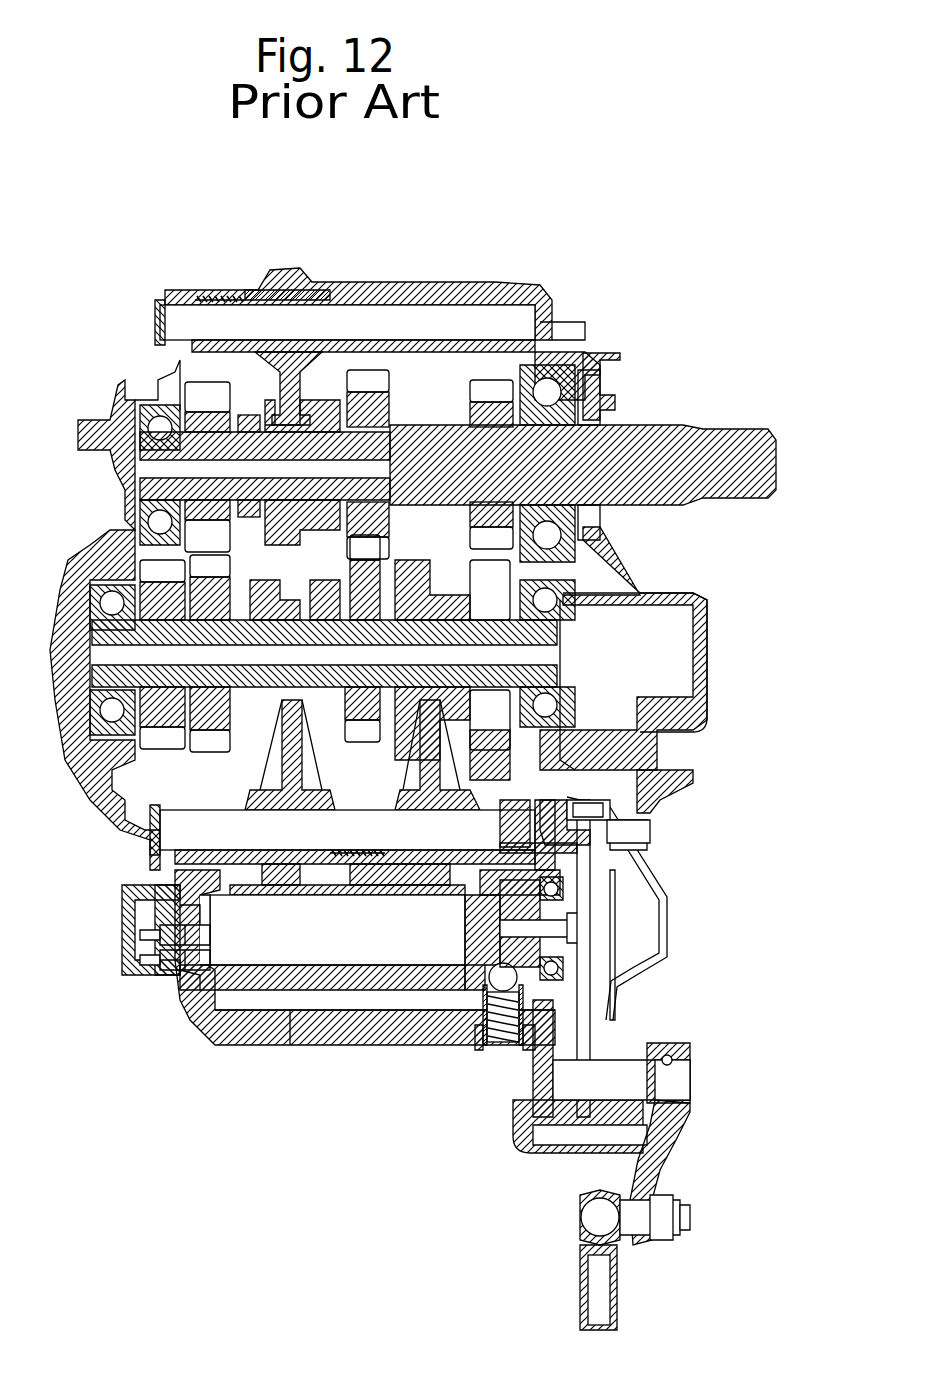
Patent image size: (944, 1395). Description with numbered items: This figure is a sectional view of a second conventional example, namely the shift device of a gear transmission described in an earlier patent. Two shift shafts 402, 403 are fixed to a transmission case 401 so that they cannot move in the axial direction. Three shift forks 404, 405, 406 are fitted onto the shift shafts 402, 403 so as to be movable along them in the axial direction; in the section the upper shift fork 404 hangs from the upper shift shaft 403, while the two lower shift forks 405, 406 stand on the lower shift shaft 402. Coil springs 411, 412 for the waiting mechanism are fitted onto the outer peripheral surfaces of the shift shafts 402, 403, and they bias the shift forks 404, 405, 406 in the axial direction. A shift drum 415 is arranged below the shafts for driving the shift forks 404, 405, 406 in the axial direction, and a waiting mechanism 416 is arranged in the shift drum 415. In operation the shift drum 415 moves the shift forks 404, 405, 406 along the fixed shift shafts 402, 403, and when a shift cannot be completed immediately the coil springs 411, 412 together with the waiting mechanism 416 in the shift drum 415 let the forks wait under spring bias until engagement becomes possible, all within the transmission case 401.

The transmission case 401 is at (263, 1035).
The shift shaft 402 is at (175, 821).
The shift shaft 403 is at (178, 328).
The shift fork 404 is at (289, 387).
The shift fork 405 is at (283, 766).
The shift fork 406 is at (423, 766).
The coil spring 411 is at (360, 858).
The coil spring 412 is at (213, 297).
The shift drum 415 is at (358, 985).
The waiting mechanism 416 is at (497, 1063).